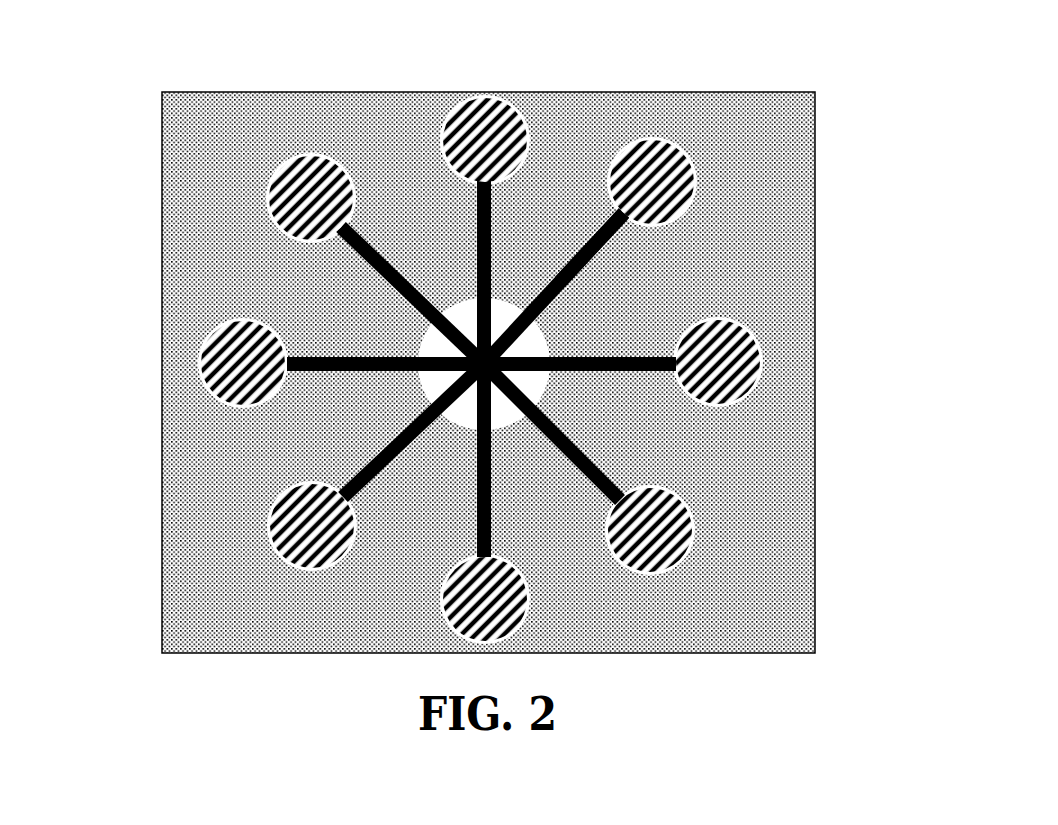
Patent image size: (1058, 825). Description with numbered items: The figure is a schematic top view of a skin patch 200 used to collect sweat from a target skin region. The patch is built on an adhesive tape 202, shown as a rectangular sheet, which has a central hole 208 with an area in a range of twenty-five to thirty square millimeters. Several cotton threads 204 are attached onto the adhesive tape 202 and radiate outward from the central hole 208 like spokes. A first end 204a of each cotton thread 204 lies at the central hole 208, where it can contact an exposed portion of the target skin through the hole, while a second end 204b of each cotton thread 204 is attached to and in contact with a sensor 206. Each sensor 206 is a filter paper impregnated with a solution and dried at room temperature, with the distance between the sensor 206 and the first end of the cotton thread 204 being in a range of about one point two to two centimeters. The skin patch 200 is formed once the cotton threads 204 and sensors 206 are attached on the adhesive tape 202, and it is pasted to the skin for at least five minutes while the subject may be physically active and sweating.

The skin patch 200 is at (473, 330).
The adhesive tape 202 is at (542, 372).
The cotton thread 204 is at (484, 369).
The first end 204a is at (550, 356).
The second end 204b is at (646, 247).
The sensor 206 is at (500, 369).
The central hole 208 is at (490, 405).